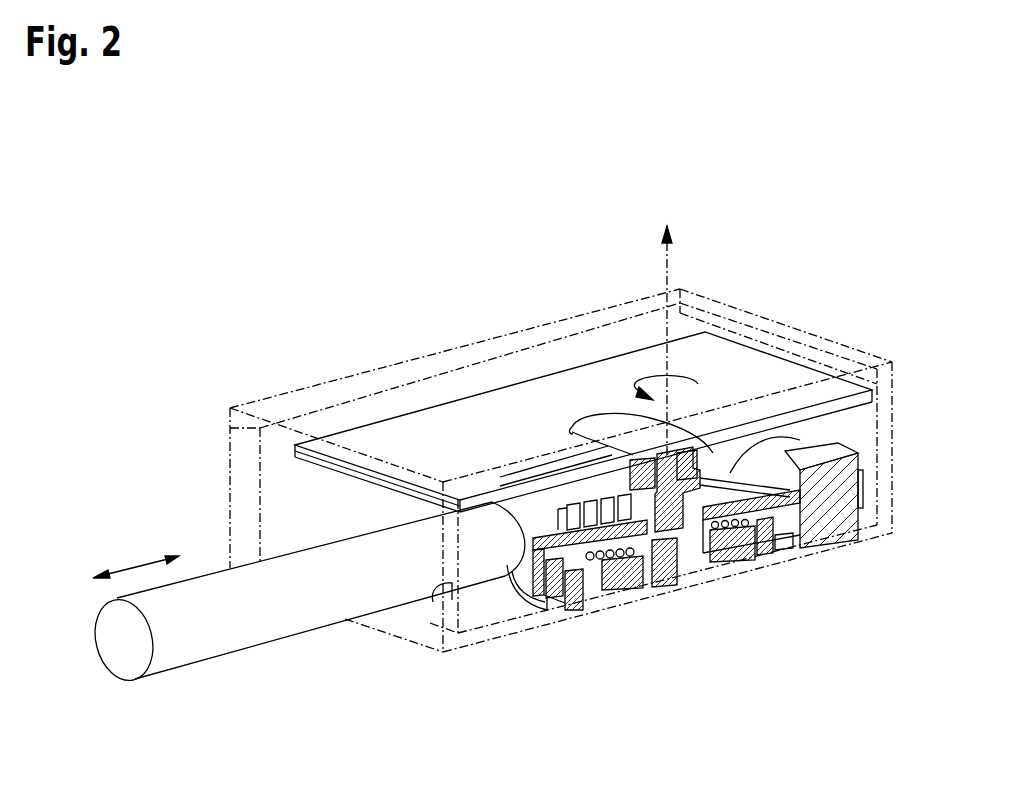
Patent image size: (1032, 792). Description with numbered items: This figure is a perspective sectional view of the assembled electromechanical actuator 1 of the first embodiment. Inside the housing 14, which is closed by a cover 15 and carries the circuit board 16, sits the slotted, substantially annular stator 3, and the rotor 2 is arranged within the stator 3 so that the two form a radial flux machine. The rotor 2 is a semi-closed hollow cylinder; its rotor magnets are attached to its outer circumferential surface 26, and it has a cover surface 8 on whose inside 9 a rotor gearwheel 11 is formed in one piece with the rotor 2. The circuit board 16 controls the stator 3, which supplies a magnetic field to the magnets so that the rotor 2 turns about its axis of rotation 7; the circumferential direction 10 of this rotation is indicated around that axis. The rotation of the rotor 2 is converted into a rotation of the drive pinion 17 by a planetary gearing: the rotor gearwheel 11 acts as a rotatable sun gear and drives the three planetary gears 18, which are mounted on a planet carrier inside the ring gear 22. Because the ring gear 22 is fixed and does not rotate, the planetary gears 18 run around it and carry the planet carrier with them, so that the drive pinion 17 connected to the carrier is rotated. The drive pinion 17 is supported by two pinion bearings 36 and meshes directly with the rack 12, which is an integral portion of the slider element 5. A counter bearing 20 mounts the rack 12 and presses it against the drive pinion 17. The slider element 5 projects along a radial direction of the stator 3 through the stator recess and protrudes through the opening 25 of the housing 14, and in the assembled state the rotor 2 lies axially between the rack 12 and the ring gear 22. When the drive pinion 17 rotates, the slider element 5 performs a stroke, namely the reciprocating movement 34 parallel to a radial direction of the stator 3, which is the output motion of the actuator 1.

The electromechanical actuator 1 is at (258, 290).
The rotor 2 is at (566, 485).
The stator 3 is at (825, 518).
The slider element 5 is at (301, 636).
The axis of rotation 7 is at (672, 277).
The cover surface 8 is at (800, 460).
The inside 9 is at (770, 553).
The circumferential direction 10 is at (657, 377).
The rotor gearwheel 11 is at (647, 590).
The rack 12 is at (614, 482).
The housing 14 is at (372, 620).
The cover 15 is at (352, 372).
The circuit board 16 is at (428, 405).
The drive pinion 17 is at (706, 572).
The planetary gears 18 is at (623, 585).
The counter bearing 20 is at (687, 455).
The ring gear 22 is at (580, 605).
The opening 25 is at (432, 553).
The outer circumferential surface 26 is at (510, 553).
The reciprocating movement 34 is at (145, 568).
The pinion bearing 36 is at (742, 456).